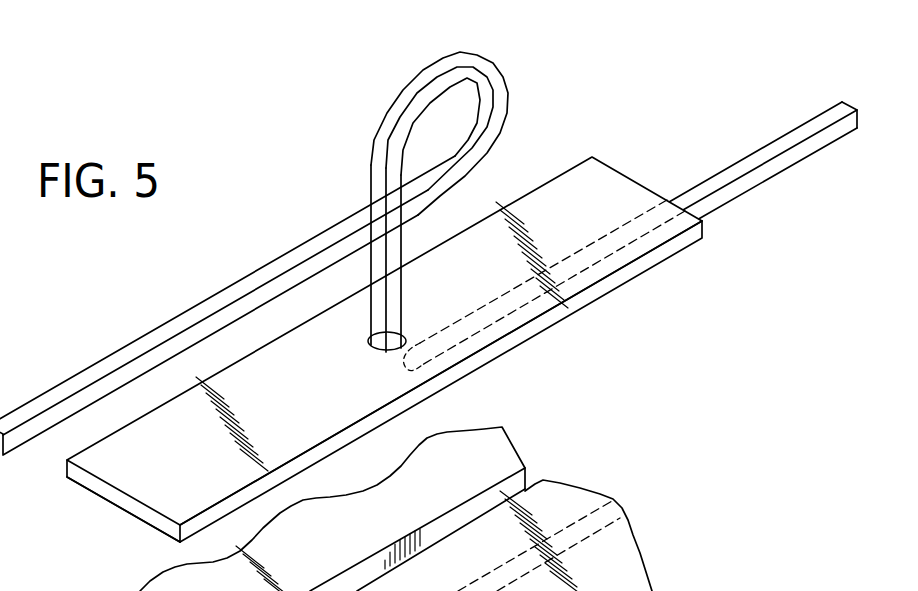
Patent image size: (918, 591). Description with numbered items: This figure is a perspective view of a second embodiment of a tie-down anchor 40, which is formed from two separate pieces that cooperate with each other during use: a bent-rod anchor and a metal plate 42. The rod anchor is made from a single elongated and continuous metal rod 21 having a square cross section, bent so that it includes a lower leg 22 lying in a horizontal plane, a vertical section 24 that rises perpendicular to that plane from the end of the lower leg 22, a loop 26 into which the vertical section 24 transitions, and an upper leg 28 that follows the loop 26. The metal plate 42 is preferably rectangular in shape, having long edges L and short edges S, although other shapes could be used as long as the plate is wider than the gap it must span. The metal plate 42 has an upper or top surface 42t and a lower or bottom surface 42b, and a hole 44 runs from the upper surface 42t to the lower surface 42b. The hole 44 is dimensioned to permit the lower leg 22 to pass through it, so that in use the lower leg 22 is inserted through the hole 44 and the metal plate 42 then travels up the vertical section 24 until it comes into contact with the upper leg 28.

The metal rod 21 is at (375, 108).
The lower leg 22 is at (800, 153).
The vertical section 24 is at (372, 273).
The loop 26 is at (492, 79).
The upper leg 28 is at (105, 368).
The tie-down anchor 40 is at (556, 103).
The metal plate 42 is at (640, 188).
The upper surface 42t is at (607, 215).
The lower surface 42b is at (673, 267).
The hole 44 is at (367, 343).
The long edges L is at (560, 320).
The short edges S is at (117, 495).